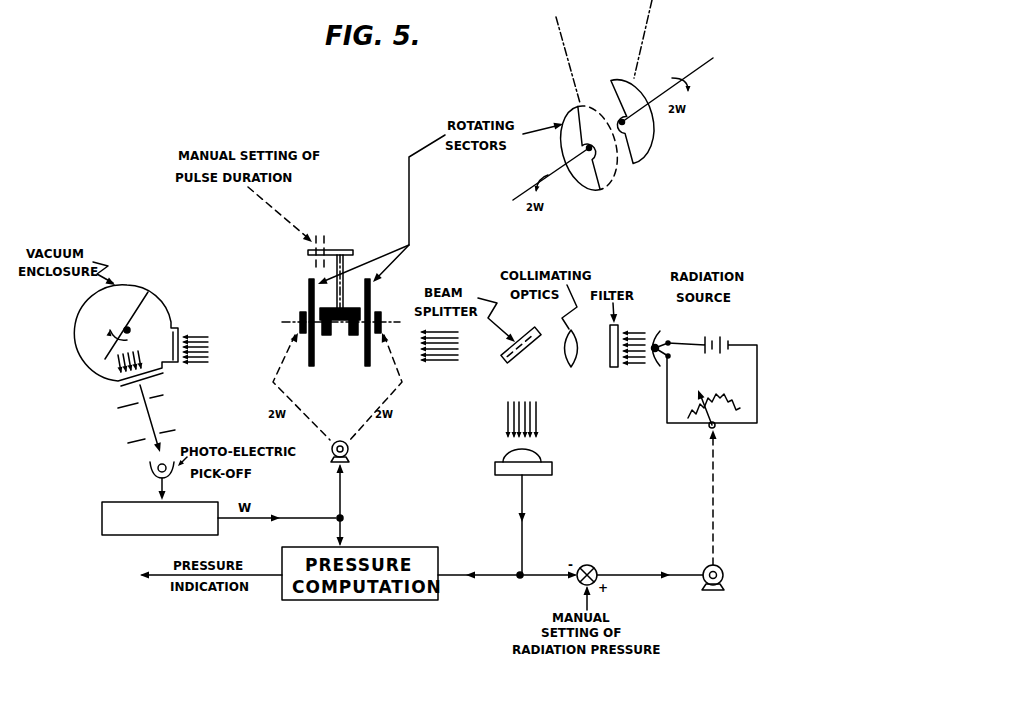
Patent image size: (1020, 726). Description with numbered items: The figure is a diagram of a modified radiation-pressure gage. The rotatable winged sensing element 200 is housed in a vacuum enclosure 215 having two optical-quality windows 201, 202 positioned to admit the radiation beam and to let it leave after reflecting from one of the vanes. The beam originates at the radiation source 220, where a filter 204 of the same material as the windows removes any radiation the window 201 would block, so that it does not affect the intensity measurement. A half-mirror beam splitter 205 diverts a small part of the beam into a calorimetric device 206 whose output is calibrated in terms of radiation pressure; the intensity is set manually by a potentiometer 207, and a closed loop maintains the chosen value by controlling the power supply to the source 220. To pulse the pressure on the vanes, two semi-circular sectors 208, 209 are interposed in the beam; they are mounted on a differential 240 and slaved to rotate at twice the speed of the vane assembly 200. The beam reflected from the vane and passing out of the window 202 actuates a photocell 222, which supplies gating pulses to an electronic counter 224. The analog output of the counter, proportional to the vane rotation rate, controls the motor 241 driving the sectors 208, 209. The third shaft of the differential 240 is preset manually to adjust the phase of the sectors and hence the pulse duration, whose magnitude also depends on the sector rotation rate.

The rotatable winged sensing element 200 is at (150, 316).
The window 201 is at (180, 330).
The window 202 is at (125, 389).
The filter 204 is at (613, 368).
The half-mirror beam splitter 205 is at (509, 364).
The calorimetric device 206 is at (552, 476).
The potentiometer 207 is at (716, 396).
The semi-circular sector 208 is at (310, 296).
The semi-circular sector 209 is at (372, 302).
The vacuum enclosure 215 is at (131, 285).
The radiation source 220 is at (664, 330).
The photocell 222 is at (150, 470).
The electronic counter 224 is at (102, 522).
The differential 240 is at (338, 334).
The motor 241 is at (352, 450).